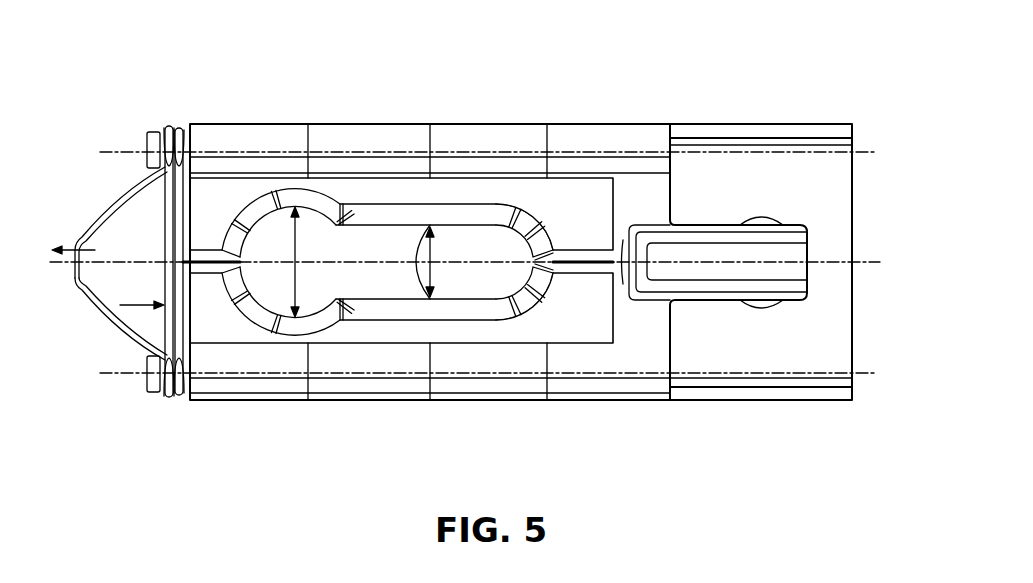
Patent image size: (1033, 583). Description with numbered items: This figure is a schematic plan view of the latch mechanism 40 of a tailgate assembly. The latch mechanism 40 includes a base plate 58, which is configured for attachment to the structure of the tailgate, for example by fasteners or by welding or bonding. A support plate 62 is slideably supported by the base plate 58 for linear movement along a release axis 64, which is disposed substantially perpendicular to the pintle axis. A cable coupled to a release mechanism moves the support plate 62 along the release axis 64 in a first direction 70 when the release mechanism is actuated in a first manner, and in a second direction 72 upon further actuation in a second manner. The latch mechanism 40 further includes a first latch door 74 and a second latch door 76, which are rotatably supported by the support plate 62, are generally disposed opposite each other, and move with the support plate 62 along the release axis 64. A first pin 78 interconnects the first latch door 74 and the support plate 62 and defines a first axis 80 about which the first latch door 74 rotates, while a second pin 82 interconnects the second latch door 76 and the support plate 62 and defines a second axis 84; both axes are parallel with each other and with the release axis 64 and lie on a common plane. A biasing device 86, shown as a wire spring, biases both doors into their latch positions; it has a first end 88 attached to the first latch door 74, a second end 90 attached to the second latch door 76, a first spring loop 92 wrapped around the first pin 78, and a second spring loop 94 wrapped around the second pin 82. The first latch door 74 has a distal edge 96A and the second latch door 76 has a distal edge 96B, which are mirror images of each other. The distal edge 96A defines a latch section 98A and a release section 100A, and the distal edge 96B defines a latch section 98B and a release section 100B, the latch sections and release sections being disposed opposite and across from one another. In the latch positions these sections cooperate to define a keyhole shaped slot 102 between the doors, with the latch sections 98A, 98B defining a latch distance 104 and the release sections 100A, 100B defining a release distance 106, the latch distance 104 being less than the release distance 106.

The latch mechanism 40 is at (800, 110).
The base plate 58 is at (825, 350).
The support plate 62 is at (351, 142).
The release axis 64 is at (858, 265).
The first direction 70 is at (887, 247).
The second direction 72 is at (65, 247).
The first latch door 74 is at (222, 197).
The second latch door 76 is at (222, 327).
The first pin 78 is at (150, 133).
The first axis 80 is at (115, 150).
The second pin 82 is at (150, 390).
The second axis 84 is at (117, 373).
The biasing device 86 is at (165, 280).
The first end 88 is at (165, 247).
The second end 90 is at (120, 305).
The first spring loop 92 is at (182, 137).
The second spring loop 94 is at (178, 392).
The distal edge of first latch door 96A is at (346, 234).
The distal edge of second latch door 96B is at (368, 288).
The latch section of first latch door 98A is at (498, 240).
The latch section of second latch door 98B is at (512, 300).
The release section of first latch door 100A is at (275, 226).
The release section of second latch door 100B is at (275, 298).
The keyhole shaped slot 102 is at (500, 220).
The latch distance 104 is at (537, 297).
The release distance 106 is at (297, 278).